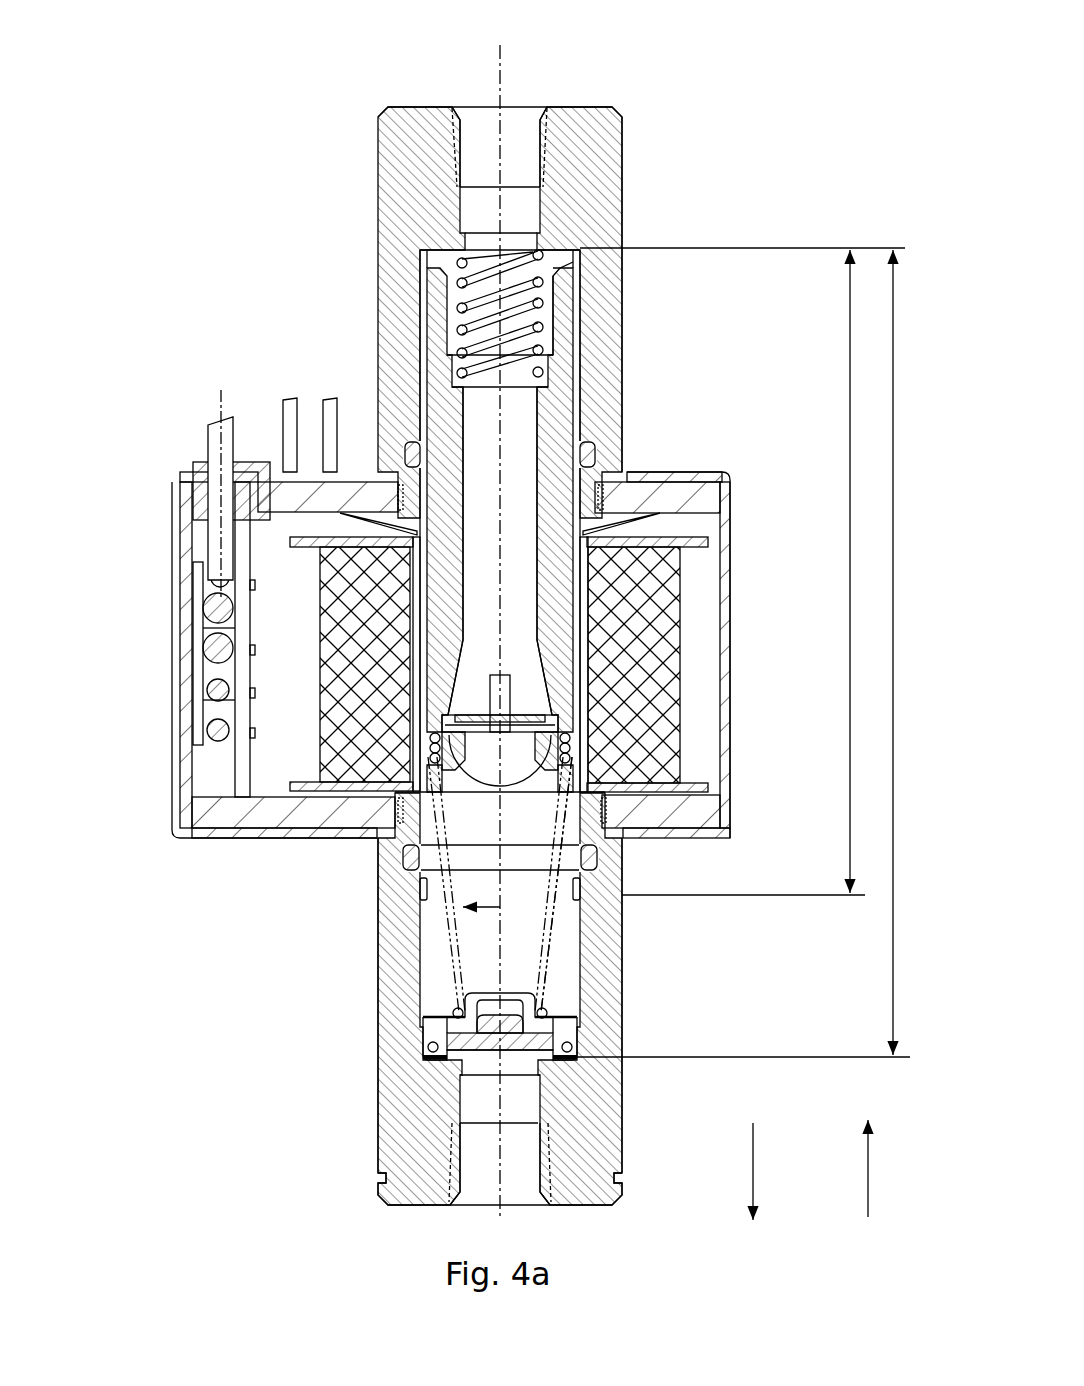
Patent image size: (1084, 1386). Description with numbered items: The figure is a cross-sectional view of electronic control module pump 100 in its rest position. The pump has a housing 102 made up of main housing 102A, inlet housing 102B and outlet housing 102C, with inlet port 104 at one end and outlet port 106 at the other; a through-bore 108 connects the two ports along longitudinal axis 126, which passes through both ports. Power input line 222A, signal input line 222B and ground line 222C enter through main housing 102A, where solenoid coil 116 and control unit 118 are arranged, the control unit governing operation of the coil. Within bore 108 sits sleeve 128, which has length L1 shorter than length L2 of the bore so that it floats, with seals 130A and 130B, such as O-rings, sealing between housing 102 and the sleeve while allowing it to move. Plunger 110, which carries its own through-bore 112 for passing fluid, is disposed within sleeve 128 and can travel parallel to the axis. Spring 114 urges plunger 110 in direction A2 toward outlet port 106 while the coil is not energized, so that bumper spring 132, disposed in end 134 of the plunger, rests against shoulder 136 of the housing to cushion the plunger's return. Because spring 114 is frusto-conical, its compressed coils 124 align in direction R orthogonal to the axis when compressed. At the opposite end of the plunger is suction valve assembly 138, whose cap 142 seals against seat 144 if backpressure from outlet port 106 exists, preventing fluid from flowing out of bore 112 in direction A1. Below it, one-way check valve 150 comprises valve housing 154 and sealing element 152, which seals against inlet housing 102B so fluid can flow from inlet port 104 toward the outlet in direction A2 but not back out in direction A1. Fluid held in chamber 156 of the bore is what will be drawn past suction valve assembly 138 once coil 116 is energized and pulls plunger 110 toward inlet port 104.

The electronic control module pump 100 is at (682, 66).
The housing 102 is at (272, 308).
The main housing 102A is at (200, 842).
The inlet housing 102B is at (376, 1153).
The outlet housing 102C is at (628, 153).
The inlet port 104 is at (508, 1200).
The outlet port 106 is at (466, 104).
The through-bore 108 is at (477, 250).
The plunger 110 is at (436, 262).
The through-bore 112 is at (528, 392).
The spring 114 is at (553, 977).
The solenoid coil 116 is at (676, 572).
The control unit 118 is at (197, 665).
The compressed coils 124 is at (544, 1008).
The longitudinal axis 126 is at (503, 72).
The sleeve 128 is at (416, 885).
The seal 130A is at (591, 455).
The seal 130B is at (593, 858).
The bumper spring 132 is at (455, 282).
The end 134 is at (557, 308).
The shoulder 136 is at (558, 261).
The suction valve assembly 138 is at (520, 787).
The cap 142 is at (525, 762).
The seat 144 is at (548, 760).
The one-way check valve 150 is at (435, 1010).
The sealing element 152 is at (548, 1043).
The valve housing 154 is at (478, 997).
The chamber 156 is at (566, 930).
The power input line 222A is at (208, 437).
The signal input line 222B is at (282, 428).
The ground line 222C is at (322, 412).
The direction R is at (484, 907).
The length L1 is at (742, 571).
The length L2 is at (743, 653).
The direction A1 is at (753, 1160).
The direction A2 is at (868, 1177).